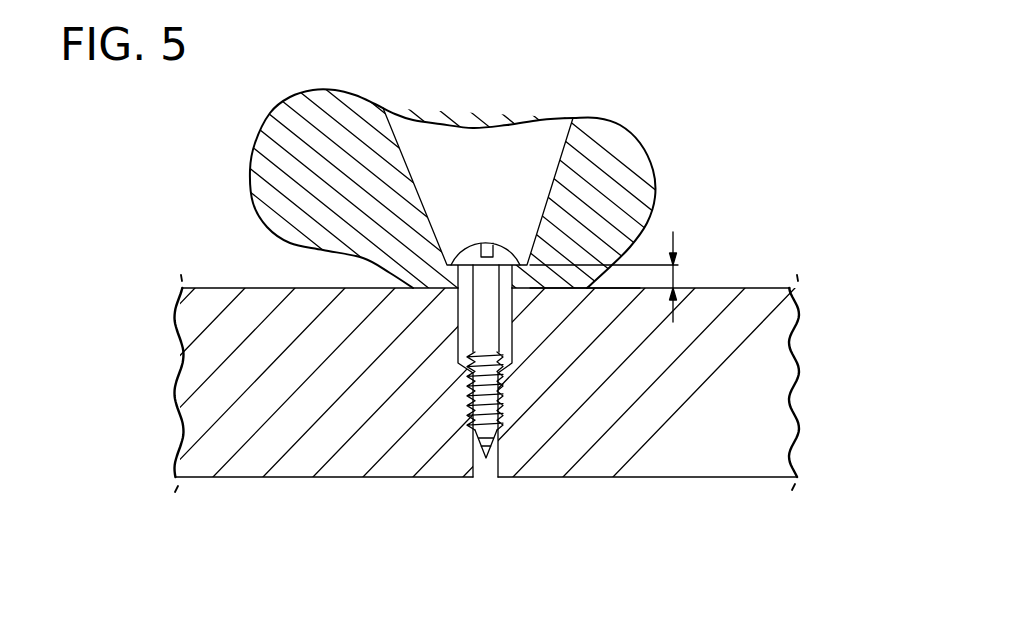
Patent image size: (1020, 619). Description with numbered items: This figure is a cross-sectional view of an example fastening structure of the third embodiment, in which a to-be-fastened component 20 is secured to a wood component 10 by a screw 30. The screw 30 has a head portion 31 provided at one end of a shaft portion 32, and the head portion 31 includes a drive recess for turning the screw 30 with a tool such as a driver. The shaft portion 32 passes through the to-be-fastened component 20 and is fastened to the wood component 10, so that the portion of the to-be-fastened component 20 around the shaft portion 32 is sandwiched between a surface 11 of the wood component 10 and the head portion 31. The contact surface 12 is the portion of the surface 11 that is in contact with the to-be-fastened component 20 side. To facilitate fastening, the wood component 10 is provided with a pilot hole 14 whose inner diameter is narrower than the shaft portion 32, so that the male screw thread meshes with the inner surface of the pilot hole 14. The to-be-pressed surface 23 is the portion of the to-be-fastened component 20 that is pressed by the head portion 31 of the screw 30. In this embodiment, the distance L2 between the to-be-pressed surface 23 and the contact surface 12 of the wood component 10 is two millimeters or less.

The wood component 10 is at (207, 300).
The surface 11 is at (257, 287).
The contact surface 12 is at (565, 293).
The pilot hole 14 is at (473, 458).
The to-be-fastened component 20 is at (302, 107).
The to-be-pressed surface 23 is at (513, 258).
The screw 30 is at (440, 229).
The head portion 31 is at (472, 247).
The shaft portion 32 is at (473, 317).
The distance L2 is at (622, 277).